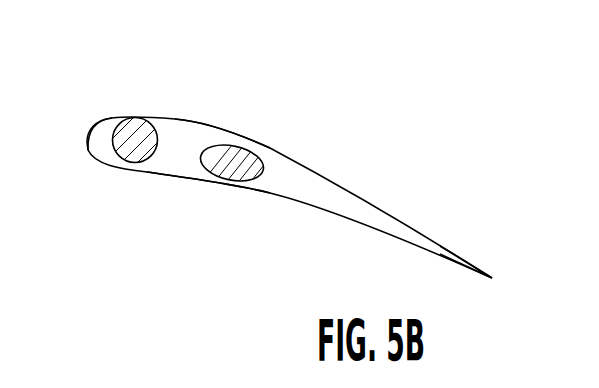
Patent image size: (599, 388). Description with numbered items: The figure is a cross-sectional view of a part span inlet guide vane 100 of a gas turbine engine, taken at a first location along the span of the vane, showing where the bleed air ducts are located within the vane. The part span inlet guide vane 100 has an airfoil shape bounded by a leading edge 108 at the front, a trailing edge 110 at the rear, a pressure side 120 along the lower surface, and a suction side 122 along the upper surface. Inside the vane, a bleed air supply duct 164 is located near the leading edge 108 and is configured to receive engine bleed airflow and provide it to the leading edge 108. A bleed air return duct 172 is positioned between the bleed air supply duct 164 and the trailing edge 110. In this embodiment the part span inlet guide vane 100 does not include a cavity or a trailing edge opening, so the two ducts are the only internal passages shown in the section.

The part span inlet guide vane 100 is at (315, 104).
The leading edge 108 is at (77, 118).
The trailing edge 110 is at (499, 270).
The pressure side 120 is at (200, 214).
The suction side 122 is at (250, 117).
The bleed air supply duct 164 is at (134, 128).
The bleed air return duct 172 is at (235, 167).